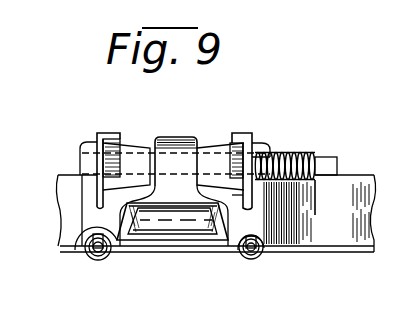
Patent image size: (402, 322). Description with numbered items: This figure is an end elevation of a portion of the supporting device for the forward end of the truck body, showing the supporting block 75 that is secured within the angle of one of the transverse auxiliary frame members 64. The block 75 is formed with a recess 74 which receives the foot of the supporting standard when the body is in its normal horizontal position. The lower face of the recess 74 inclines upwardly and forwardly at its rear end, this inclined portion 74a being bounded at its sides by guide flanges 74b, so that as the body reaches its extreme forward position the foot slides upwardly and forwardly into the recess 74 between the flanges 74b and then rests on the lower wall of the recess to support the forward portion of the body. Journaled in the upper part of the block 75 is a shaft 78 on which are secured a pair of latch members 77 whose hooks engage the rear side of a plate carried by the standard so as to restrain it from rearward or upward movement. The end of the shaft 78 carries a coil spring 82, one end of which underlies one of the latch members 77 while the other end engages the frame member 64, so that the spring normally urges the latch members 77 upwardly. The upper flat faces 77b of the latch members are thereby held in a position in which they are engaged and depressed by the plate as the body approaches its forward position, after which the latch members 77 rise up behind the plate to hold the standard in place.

The transverse auxiliary frame member 64 is at (346, 251).
The recess 74 is at (184, 218).
The inclined portion of recess 74a is at (157, 230).
The guide flanges 74b is at (222, 230).
The supporting block 75 is at (188, 126).
The latch members 77 is at (90, 125).
The upper flat faces of latch members 77b is at (263, 107).
The shaft 78 is at (344, 163).
The coil spring 82 is at (308, 153).